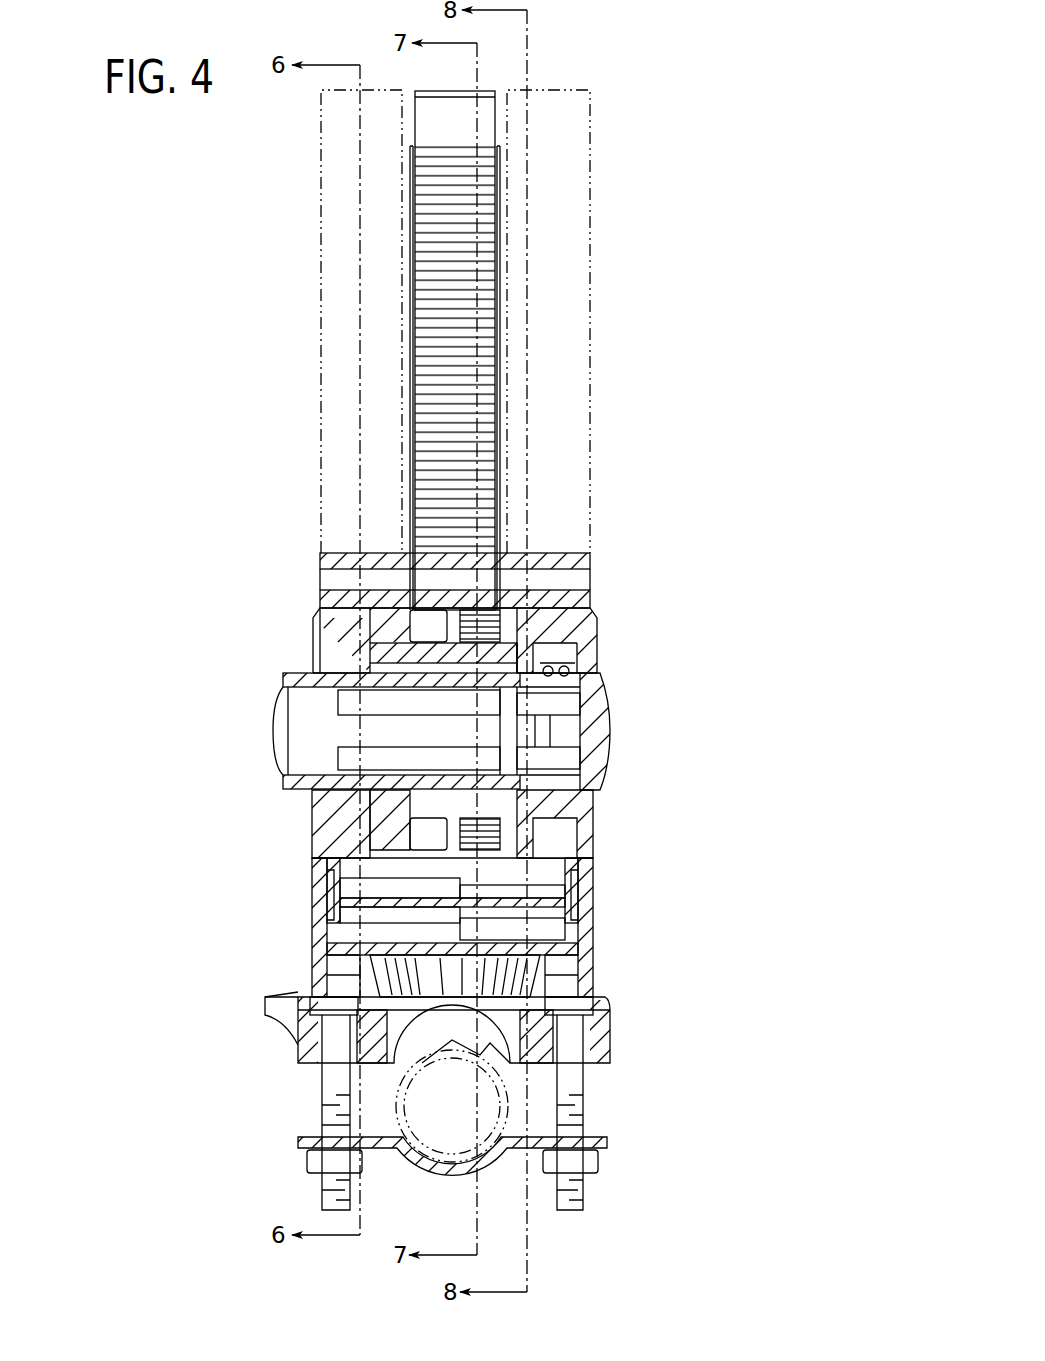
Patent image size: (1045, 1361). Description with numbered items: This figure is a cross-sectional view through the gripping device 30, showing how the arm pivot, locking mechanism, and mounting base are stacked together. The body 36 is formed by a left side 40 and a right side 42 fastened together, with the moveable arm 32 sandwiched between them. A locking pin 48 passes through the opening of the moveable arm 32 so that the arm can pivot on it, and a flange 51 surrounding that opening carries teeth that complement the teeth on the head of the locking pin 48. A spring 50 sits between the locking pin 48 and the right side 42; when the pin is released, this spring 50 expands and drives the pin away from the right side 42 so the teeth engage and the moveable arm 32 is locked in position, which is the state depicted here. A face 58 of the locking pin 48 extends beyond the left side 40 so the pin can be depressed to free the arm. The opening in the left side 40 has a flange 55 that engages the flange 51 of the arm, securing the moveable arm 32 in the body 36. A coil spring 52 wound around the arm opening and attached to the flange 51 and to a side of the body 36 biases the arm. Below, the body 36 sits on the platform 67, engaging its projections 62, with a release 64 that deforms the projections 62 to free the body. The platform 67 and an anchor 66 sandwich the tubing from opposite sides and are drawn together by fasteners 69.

The gripping device 30 is at (680, 82).
The moveable arm 32 is at (487, 100).
The body 36 is at (306, 866).
The left side 40 is at (313, 612).
The right side 42 is at (592, 620).
The locking pin 48 is at (286, 790).
The spring 50 is at (575, 672).
The flange 51 is at (370, 655).
The coil spring 52 is at (495, 846).
The flange 55 is at (378, 642).
The face 58 is at (272, 752).
The projections 62 is at (540, 966).
The release 64 is at (276, 997).
The anchor 66 is at (605, 1145).
The platform 67 is at (607, 1042).
The fastener 69 is at (322, 1116).